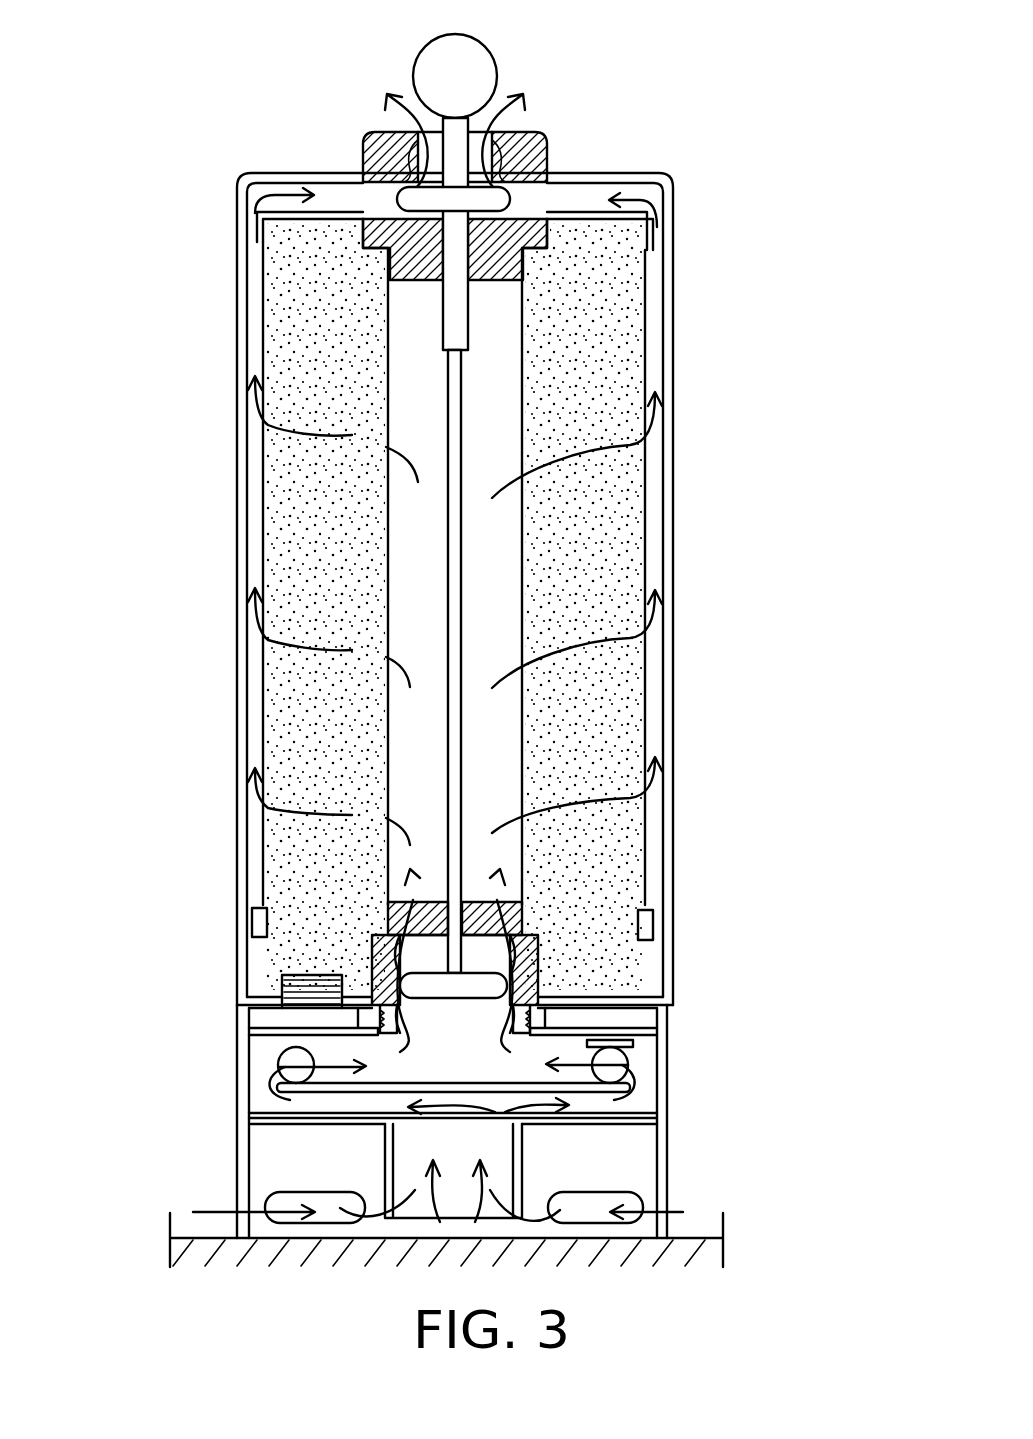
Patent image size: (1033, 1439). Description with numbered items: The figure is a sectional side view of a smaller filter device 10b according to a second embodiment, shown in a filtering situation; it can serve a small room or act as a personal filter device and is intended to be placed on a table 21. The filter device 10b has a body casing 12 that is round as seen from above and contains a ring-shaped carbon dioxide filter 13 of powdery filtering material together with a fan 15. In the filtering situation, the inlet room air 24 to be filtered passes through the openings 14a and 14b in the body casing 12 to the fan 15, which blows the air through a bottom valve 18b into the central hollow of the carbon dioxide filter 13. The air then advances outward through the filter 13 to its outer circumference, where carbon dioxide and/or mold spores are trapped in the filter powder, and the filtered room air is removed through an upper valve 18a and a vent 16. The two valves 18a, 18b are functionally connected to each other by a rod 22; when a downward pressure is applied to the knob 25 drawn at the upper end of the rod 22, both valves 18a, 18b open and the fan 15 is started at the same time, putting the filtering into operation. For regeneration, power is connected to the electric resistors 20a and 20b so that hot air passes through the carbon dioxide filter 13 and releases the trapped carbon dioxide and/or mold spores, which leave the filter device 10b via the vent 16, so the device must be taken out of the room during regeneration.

The filter device 10b is at (748, 102).
The body casing 12 is at (668, 790).
The carbon dioxide filter 13 is at (620, 580).
The opening 14a is at (277, 1200).
The opening 14b is at (612, 1195).
The fan 15 is at (417, 1185).
The vent 16 is at (430, 132).
The upper valve 18a is at (497, 200).
The bottom valve 18b is at (478, 992).
The electric resistor 20a is at (292, 1050).
The electric resistor 20b is at (624, 1063).
The table 21 is at (698, 1233).
The rod 22 is at (450, 583).
The room air 24 is at (198, 1208).
The knob 25 is at (478, 56).